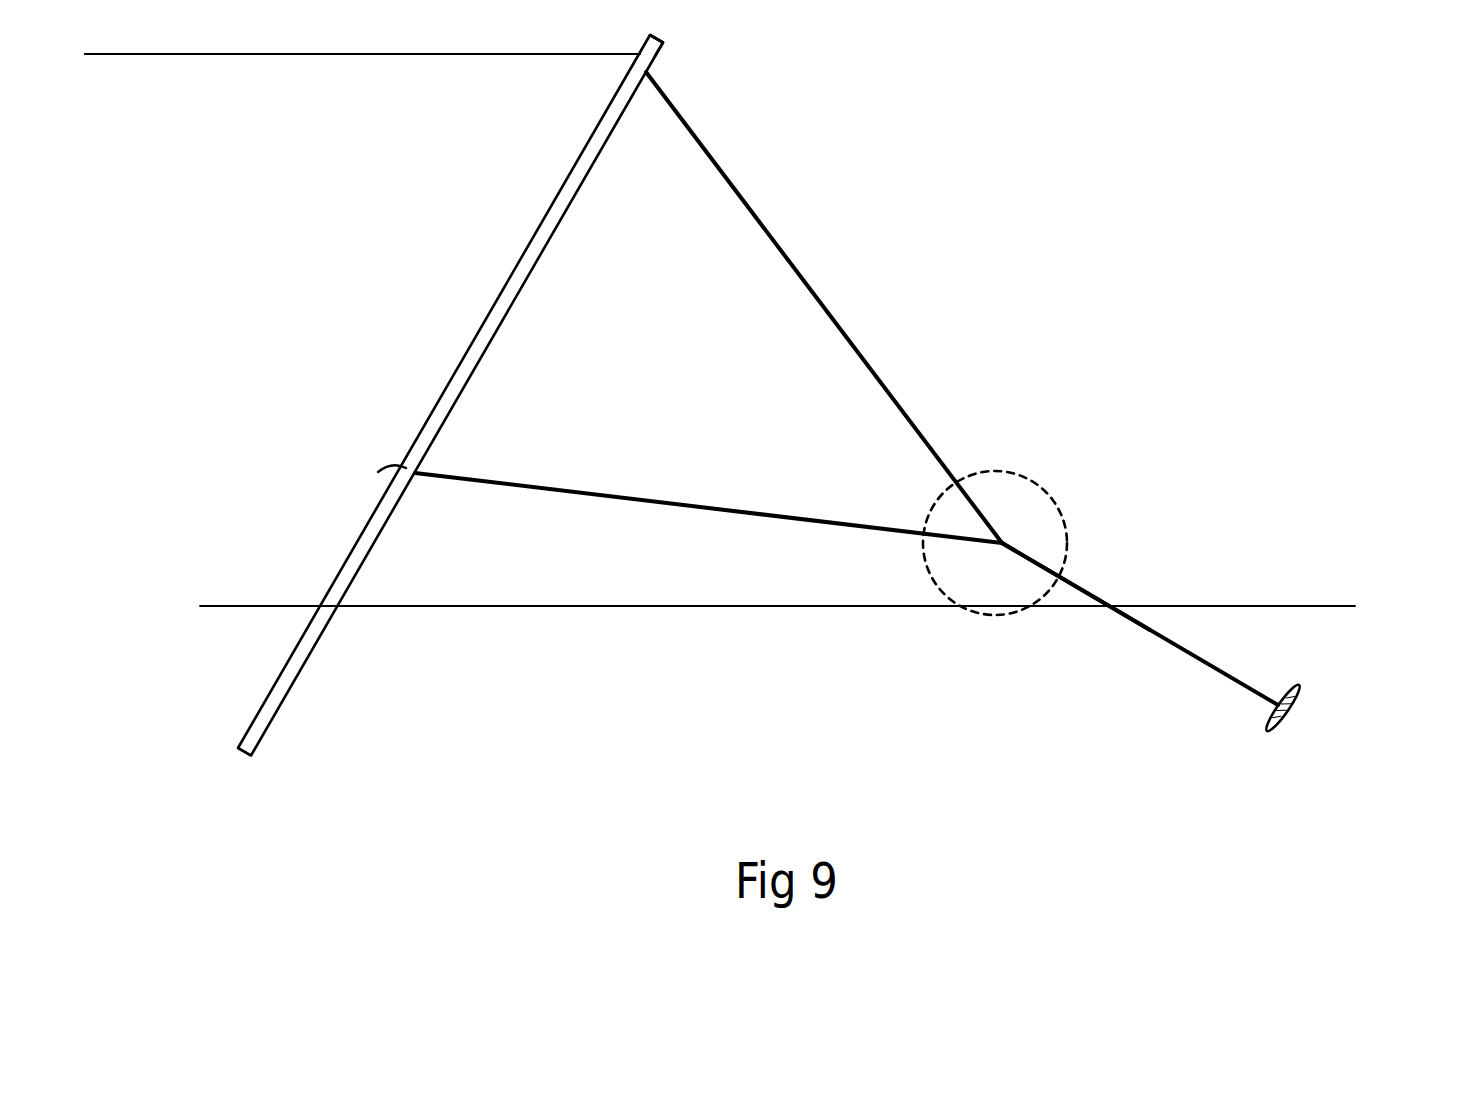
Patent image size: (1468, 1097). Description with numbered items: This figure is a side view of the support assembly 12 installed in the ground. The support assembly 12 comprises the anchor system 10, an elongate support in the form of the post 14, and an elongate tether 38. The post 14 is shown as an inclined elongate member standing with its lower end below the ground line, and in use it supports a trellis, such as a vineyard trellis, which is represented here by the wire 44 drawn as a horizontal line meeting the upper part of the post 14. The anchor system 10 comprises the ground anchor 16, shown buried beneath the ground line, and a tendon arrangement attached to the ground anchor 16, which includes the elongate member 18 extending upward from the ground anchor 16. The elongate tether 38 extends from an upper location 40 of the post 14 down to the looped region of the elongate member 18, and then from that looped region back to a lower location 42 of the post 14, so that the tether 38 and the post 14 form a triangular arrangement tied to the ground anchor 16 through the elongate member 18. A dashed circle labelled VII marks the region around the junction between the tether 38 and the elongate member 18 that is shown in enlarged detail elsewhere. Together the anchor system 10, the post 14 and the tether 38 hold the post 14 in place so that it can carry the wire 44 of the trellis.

The anchor system 10 is at (1147, 685).
The support assembly 12 is at (820, 187).
The post 14 is at (467, 352).
The ground anchor 16 is at (1290, 710).
The elongate member 18 is at (1213, 663).
The elongate tether 38 is at (695, 505).
The upper location 40 is at (630, 107).
The lower location 42 is at (415, 476).
The wire 44 is at (360, 54).
The detail circle VII is at (1045, 490).